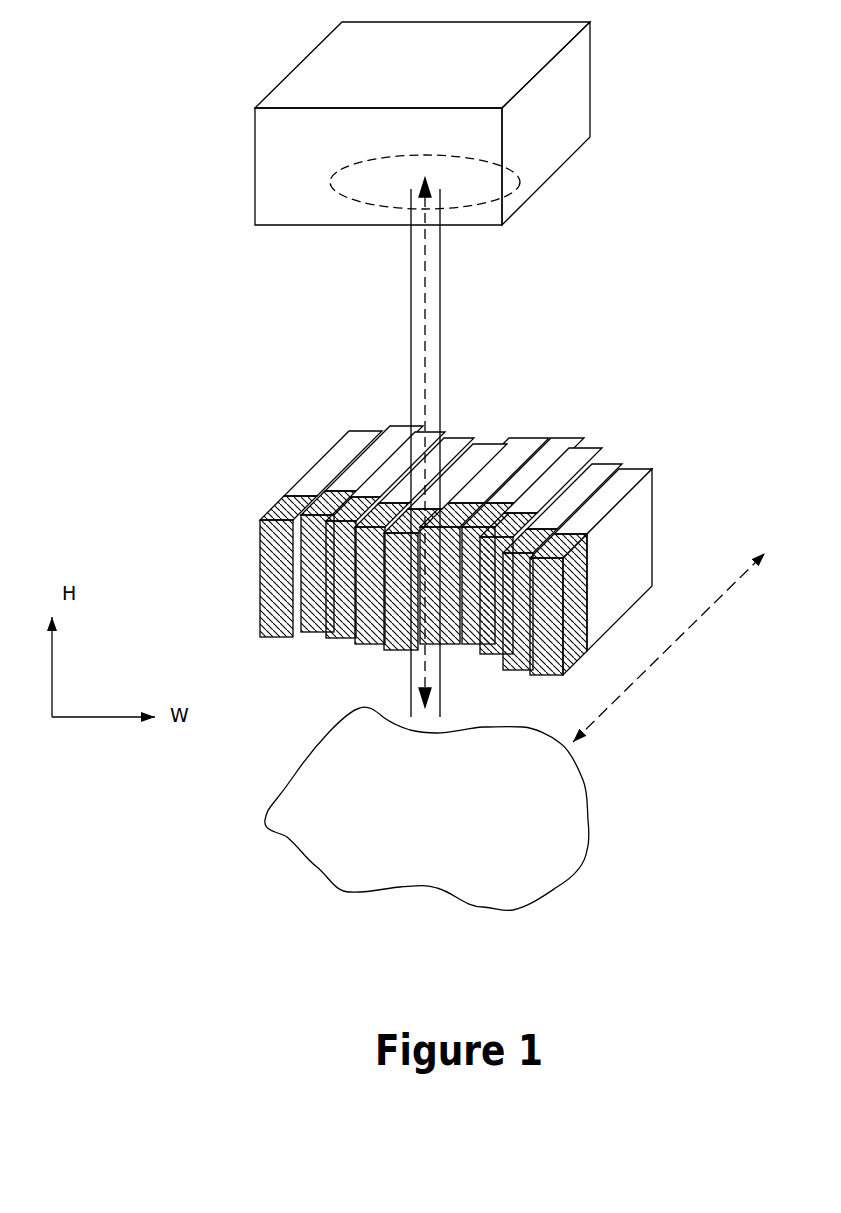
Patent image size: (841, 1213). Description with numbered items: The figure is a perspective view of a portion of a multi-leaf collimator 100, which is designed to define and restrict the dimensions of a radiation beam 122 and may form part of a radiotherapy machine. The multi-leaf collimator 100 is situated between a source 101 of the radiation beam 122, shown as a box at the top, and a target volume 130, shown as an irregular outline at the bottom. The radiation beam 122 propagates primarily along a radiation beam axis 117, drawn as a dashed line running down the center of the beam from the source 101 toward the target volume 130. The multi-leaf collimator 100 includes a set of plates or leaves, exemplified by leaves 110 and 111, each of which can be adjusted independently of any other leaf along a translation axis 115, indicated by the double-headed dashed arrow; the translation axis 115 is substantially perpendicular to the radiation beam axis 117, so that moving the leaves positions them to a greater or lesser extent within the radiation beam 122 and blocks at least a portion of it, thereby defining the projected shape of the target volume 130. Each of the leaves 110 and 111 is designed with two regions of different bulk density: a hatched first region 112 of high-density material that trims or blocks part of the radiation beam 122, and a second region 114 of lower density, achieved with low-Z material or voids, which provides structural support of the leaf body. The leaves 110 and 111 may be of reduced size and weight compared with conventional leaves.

The multi-leaf collimator 100 is at (480, 575).
The source 101 is at (603, 57).
The leaf 110 is at (486, 542).
The leaf 111 is at (591, 492).
The first region 112 is at (571, 667).
The second region 114 is at (635, 545).
The translation axis 115 is at (703, 618).
The radiation beam axis 117 is at (422, 335).
The radiation beam 122 is at (444, 300).
The target volume 130 is at (583, 823).